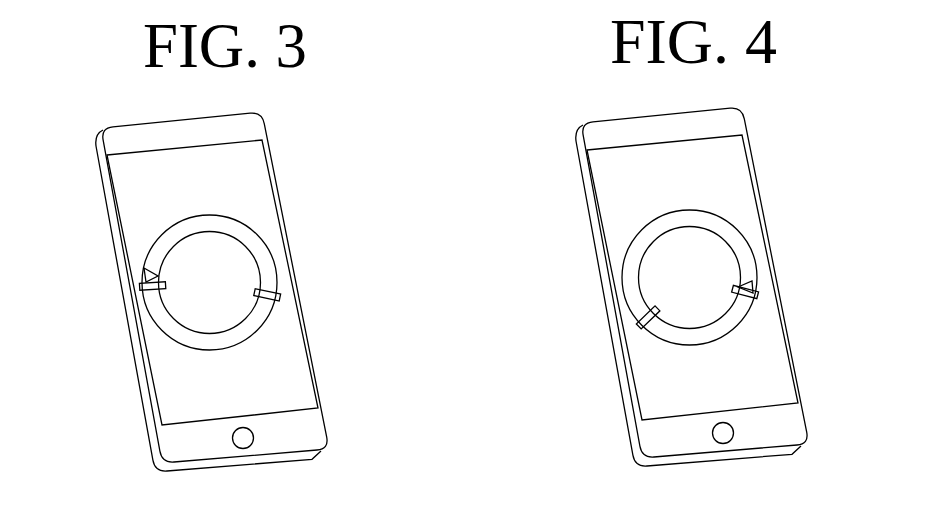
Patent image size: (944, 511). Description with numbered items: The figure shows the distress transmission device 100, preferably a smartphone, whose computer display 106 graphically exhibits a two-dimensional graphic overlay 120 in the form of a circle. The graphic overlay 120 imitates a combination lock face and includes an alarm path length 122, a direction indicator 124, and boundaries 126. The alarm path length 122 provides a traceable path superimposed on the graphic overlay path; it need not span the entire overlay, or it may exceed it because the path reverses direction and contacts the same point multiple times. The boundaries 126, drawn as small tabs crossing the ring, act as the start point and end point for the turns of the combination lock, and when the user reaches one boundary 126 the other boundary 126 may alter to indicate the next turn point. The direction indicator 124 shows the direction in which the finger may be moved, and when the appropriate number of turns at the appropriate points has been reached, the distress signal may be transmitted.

In FIG. 3, the distress transmission device 100 is at (65, 113).
In FIG. 4, the distress transmission device 100 is at (654, 282).
In FIG. 3, the computer display 106 is at (278, 360).
In FIG. 4, the computer display 106 is at (639, 277).
In FIG. 3, the graphic overlay 120 is at (280, 275).
In FIG. 4, the graphic overlay 120 is at (615, 277).
In FIG. 3, the alarm path length 122 is at (254, 241).
In FIG. 4, the alarm path length 122 is at (639, 258).
In FIG. 3, the direction indicator 124 is at (146, 273).
In FIG. 4, the direction indicator 124 is at (792, 278).
In FIG. 3, the boundaries 126 is at (141, 291).
In FIG. 4, the boundaries 126 is at (672, 307).